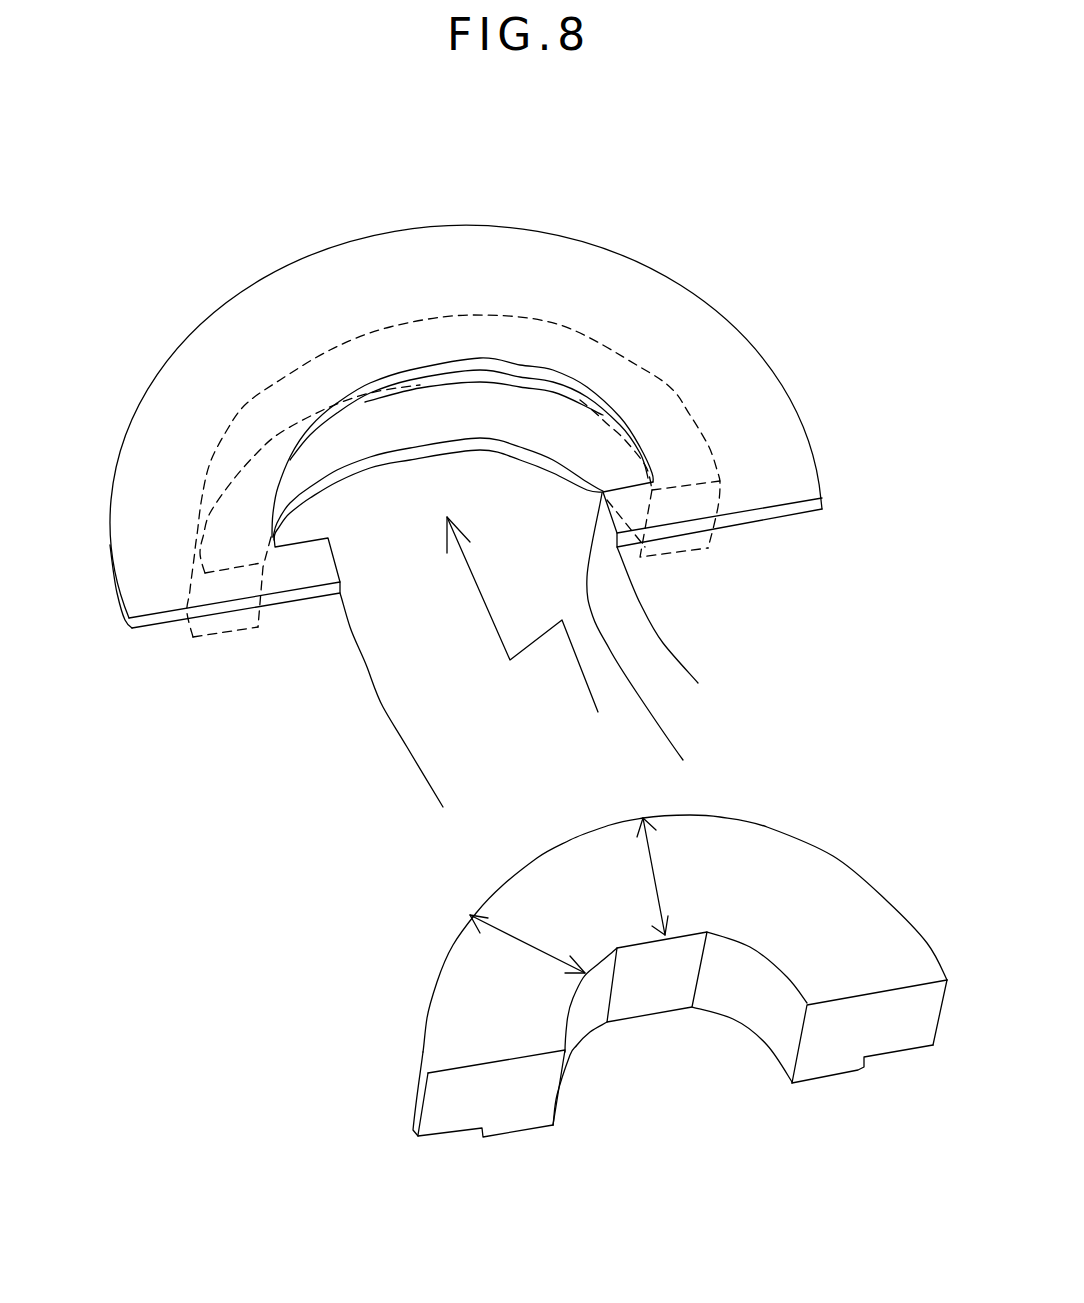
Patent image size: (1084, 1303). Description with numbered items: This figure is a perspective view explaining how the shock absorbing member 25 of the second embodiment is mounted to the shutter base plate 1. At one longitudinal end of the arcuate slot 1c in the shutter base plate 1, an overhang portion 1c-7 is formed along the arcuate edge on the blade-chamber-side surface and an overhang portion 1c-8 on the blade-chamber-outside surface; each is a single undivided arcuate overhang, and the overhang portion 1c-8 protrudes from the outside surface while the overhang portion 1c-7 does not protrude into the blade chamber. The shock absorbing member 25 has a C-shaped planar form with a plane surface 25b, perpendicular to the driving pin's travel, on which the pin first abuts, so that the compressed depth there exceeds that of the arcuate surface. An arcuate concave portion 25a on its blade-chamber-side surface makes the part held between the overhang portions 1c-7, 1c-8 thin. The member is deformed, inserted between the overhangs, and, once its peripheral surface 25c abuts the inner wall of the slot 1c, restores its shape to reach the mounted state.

The shutter base plate 1 is at (784, 606).
The slot 1c is at (360, 657).
The overhang portion 1c-7 is at (357, 447).
The overhang portion 1c-8 is at (587, 377).
The shock absorbing member 25 is at (338, 1000).
The arcuate concave portion 25a is at (447, 1140).
The plane surface 25b is at (652, 1000).
The peripheral surface 25c is at (420, 1067).